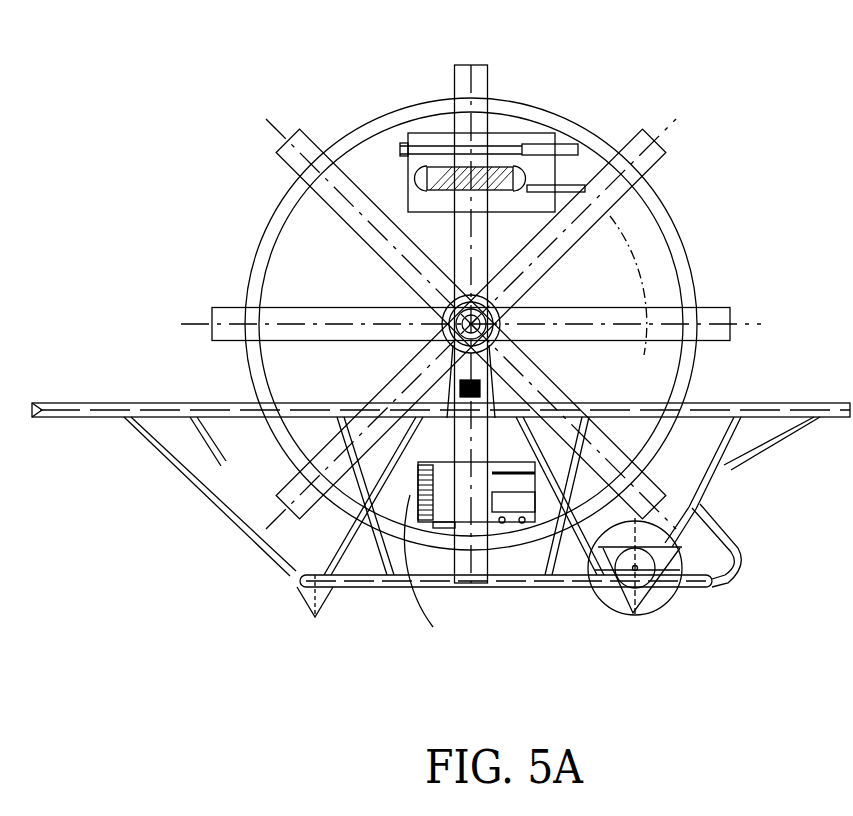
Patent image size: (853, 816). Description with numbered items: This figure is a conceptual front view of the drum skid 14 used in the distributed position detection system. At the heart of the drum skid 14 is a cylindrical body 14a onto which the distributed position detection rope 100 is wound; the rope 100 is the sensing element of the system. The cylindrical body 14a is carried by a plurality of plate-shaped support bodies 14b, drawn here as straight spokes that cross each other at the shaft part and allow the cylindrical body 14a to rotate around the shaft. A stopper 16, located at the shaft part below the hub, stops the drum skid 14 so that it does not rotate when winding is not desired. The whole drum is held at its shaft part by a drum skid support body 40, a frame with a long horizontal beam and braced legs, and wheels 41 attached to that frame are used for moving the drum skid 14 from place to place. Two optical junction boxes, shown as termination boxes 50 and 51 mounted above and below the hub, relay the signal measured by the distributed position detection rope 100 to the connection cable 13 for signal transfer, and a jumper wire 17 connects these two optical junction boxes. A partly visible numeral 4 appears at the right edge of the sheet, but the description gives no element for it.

The connection cable 13 is at (469, 557).
The drum skid 14 is at (444, 324).
The cylindrical body 14a is at (415, 324).
The plate-shaped support bodies 14b is at (420, 324).
The stopper 16 is at (408, 356).
The jumper wire 17 is at (633, 272).
The drum skid support body 40 is at (441, 513).
The wheels 41 is at (683, 586).
The termination box 50 is at (498, 135).
The termination box 51 is at (506, 566).
The distributed position detection rope 100 is at (536, 109).
The partial numeral 4 is at (846, 664).